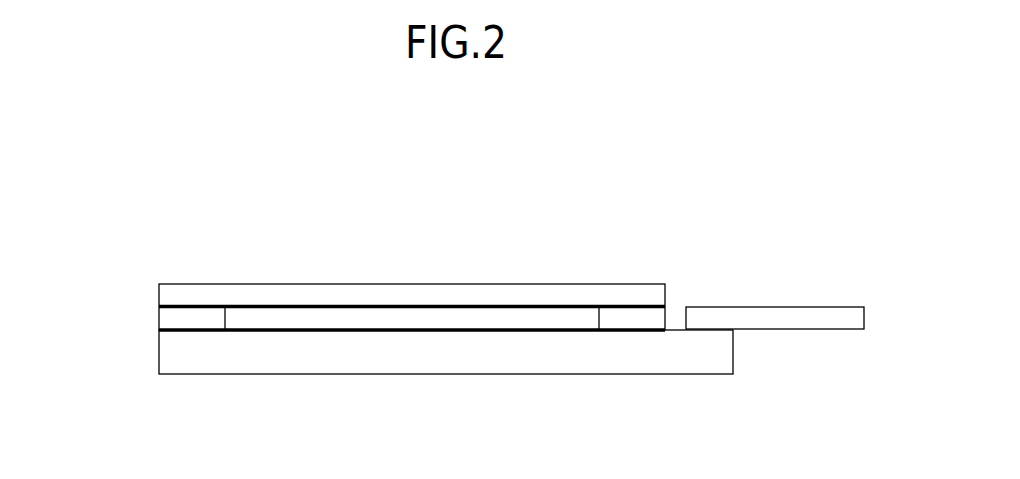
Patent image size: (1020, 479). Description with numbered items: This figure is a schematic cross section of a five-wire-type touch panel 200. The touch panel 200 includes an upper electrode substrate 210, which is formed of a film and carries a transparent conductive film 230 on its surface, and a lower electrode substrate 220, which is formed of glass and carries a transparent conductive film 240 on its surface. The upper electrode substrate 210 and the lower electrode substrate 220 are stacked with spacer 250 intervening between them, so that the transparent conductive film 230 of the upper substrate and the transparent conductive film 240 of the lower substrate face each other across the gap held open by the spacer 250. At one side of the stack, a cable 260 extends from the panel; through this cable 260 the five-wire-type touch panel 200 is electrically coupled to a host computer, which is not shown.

The five-wire-type touch panel 200 is at (728, 186).
The upper electrode substrate 210 is at (494, 284).
The lower electrode substrate 220 is at (492, 374).
The transparent conductive film 230 is at (159, 307).
The transparent conductive film 240 is at (159, 333).
The spacer 250 is at (170, 316).
The cable 260 is at (758, 306).